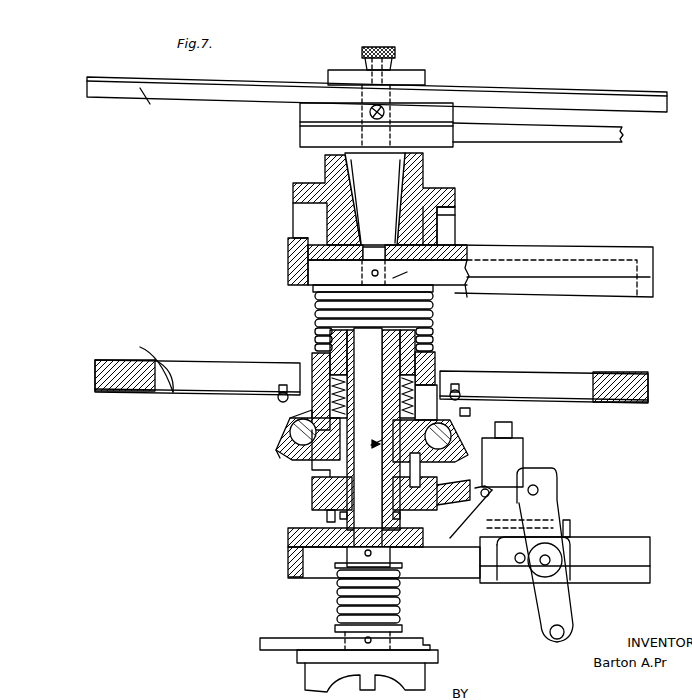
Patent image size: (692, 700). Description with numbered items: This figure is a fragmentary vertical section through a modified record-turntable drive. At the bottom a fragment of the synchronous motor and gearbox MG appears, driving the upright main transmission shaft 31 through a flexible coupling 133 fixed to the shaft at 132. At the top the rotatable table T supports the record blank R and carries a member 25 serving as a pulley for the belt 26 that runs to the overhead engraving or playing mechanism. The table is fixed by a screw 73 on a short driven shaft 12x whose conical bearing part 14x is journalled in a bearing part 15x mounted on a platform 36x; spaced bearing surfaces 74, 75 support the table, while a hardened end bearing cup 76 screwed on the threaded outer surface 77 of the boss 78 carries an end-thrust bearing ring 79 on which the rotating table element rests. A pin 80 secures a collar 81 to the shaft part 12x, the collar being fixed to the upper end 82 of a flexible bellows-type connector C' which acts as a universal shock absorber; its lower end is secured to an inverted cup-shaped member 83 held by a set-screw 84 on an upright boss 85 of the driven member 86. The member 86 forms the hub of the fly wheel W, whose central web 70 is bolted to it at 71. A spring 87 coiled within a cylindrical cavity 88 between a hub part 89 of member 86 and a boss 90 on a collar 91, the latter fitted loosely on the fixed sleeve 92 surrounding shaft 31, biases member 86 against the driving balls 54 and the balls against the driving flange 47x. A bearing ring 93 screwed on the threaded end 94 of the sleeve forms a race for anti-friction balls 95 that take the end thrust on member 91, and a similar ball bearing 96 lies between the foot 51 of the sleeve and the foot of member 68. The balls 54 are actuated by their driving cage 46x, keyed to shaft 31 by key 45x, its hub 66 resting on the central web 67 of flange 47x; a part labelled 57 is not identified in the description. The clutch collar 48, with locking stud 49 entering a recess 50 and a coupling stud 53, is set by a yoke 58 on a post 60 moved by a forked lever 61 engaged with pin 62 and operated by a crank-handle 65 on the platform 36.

The record-blank R is at (272, 80).
The rotatable table T is at (145, 104).
The pulley member 25 is at (300, 112).
The belt 26 is at (552, 135).
The screw 73 is at (384, 112).
The bearing surface 74 is at (325, 160).
The boss 78 is at (330, 217).
The bearing part 15x is at (425, 172).
The conical bearing part 14x is at (375, 199).
The driven shaft 12x is at (373, 245).
The bearing surface 75 is at (337, 233).
The end bearing cup 76 is at (445, 232).
The threaded outer surface 77 is at (430, 238).
The end thrust bearing ring 79 is at (360, 245).
The pin 80 is at (370, 273).
The collar 81 is at (409, 273).
The upper end of connector 82 is at (322, 282).
The platform 36x is at (608, 247).
The threaded end of sleeve 94 is at (395, 328).
The bellows-type connector C is at (317, 310).
The bearing ring 93 is at (330, 328).
The collar 91 is at (335, 375).
The spring 87 is at (327, 382).
The driven member 86 is at (312, 405).
The upright boss 85 is at (440, 372).
The inverted cup-shaped member 83 is at (440, 365).
The set-screw 84 is at (437, 385).
The bolt 71 is at (279, 390).
The fly wheel W is at (84, 374).
The central web 70 is at (128, 362).
The anti-friction balls 95 is at (372, 360).
The boss 90 is at (368, 438).
The hub part 89 is at (345, 424).
The key 45x is at (371, 440).
The driving cage 46x is at (288, 412).
The driving balls 54 is at (278, 426).
The ball bearing 57 is at (452, 436).
The driving flange 47x is at (281, 447).
The cavity 88 is at (462, 418).
The hub 66 is at (555, 583).
The fixed sleeve 92 is at (354, 467).
The hole 68 is at (343, 490).
The central web 67 is at (315, 458).
The clutch collar 48 is at (310, 502).
The locking stud 49 is at (327, 517).
The ball bearing 96 is at (417, 513).
The yoke 58 is at (453, 503).
The coupling stud 53 is at (421, 476).
The foot of sleeve 51 is at (413, 530).
The recess 50 is at (331, 547).
The main transmission shaft 31 is at (373, 543).
The platform 36 is at (613, 545).
The fixing of coupling 132 is at (340, 572).
The flexible coupling 133 is at (338, 605).
The synchronous motor and gearbox MG is at (312, 678).
The post 60 is at (512, 430).
The forked lever 61 is at (507, 480).
The pin 62 is at (486, 489).
The crank-handle 65 is at (563, 607).